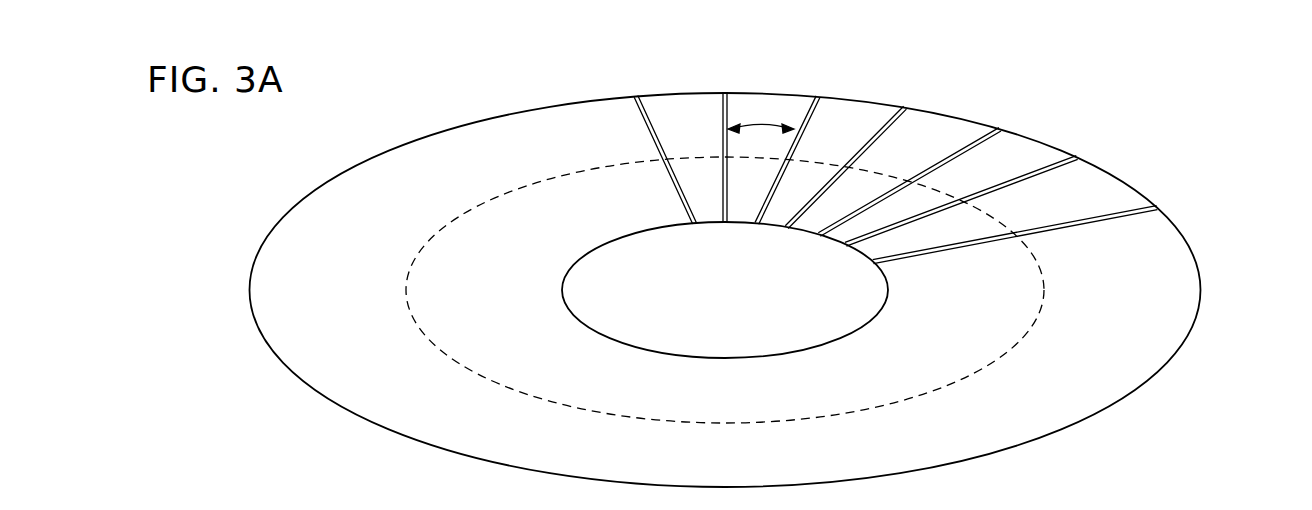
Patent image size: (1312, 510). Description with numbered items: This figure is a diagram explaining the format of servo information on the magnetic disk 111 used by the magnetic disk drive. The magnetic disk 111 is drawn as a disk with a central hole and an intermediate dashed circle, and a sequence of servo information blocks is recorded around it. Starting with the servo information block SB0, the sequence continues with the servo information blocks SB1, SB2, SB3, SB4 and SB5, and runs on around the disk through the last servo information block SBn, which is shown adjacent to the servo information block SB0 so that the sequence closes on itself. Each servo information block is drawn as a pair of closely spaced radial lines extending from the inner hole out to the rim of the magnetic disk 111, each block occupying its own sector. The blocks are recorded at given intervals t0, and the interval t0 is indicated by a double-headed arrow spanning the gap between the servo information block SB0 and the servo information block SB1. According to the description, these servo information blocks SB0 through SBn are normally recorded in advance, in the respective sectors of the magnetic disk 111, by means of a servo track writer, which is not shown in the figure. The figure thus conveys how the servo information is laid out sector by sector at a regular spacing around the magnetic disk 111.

The magnetic disk 111 is at (1201, 279).
The servo information block SBn is at (641, 115).
The servo information block SB0 is at (720, 115).
The servo information block SB1 is at (811, 113).
The servo information block SB2 is at (891, 124).
The servo information block SB3 is at (976, 134).
The servo information block SB4 is at (1055, 165).
The servo information block SB5 is at (1130, 214).
The given interval t0 is at (760, 126).